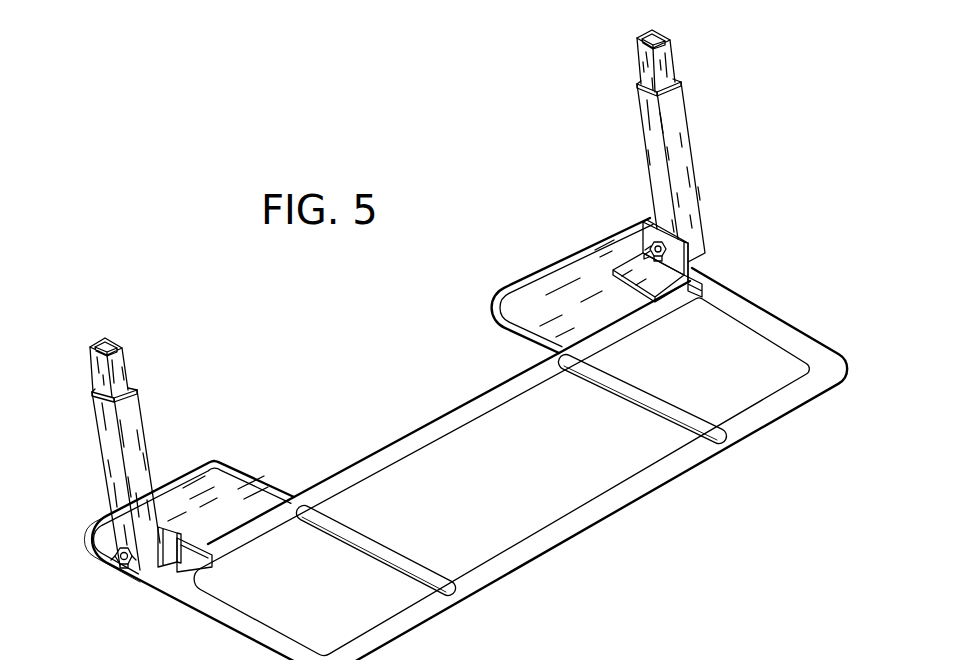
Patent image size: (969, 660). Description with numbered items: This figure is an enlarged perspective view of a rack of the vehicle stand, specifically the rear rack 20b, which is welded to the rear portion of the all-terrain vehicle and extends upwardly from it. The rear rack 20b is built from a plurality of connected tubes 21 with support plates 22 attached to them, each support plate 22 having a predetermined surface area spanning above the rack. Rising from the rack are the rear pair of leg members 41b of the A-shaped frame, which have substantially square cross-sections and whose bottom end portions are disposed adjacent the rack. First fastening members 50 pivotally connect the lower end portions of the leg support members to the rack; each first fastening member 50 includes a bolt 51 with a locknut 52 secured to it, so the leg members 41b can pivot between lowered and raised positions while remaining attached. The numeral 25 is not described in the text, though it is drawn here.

The rear rack 20b is at (405, 120).
The connected tubes 21 is at (640, 110).
The support plates 22 is at (560, 290).
The base frame 25 is at (697, 298).
The rear pair of leg members 41b is at (637, 62).
The first fastening members 50 is at (632, 217).
The bolt 51 is at (650, 250).
The locknut 52 is at (688, 236).